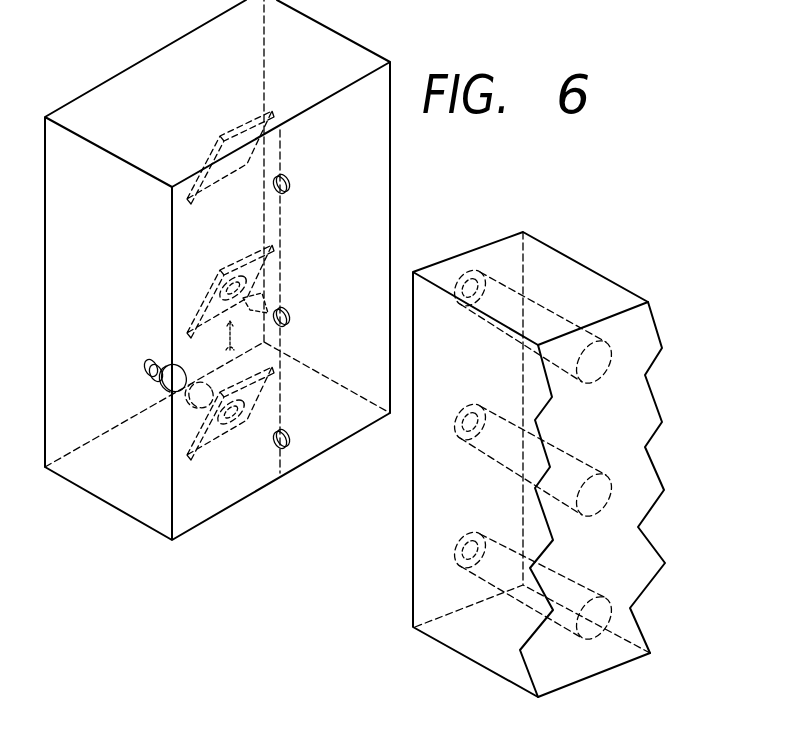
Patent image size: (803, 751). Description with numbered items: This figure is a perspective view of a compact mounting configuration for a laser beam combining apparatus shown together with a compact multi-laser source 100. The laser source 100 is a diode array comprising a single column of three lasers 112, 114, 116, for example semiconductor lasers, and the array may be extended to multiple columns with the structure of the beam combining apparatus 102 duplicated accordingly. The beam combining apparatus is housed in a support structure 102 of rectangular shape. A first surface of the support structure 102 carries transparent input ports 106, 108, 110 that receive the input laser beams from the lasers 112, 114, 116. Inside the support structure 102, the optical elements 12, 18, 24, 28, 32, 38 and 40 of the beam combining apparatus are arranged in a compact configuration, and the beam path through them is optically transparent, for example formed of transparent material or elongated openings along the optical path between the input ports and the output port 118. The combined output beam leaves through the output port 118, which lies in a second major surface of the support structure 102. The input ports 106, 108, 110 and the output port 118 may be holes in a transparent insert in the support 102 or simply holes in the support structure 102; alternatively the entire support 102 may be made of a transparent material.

The support structure 102 is at (337, 23).
The multi-laser source 100 is at (607, 254).
The optical element 18 is at (248, 118).
The optical element 12 is at (238, 258).
The optical element 32 is at (233, 432).
The optical element 24 is at (258, 302).
The optical element 28 is at (237, 342).
The input port 106 is at (288, 180).
The input port 108 is at (290, 312).
The input port 110 is at (290, 436).
The output port 118 is at (157, 360).
The optical element 40 is at (160, 392).
The optical element 38 is at (185, 413).
The laser 112 is at (613, 357).
The laser 114 is at (613, 497).
The laser 116 is at (613, 613).